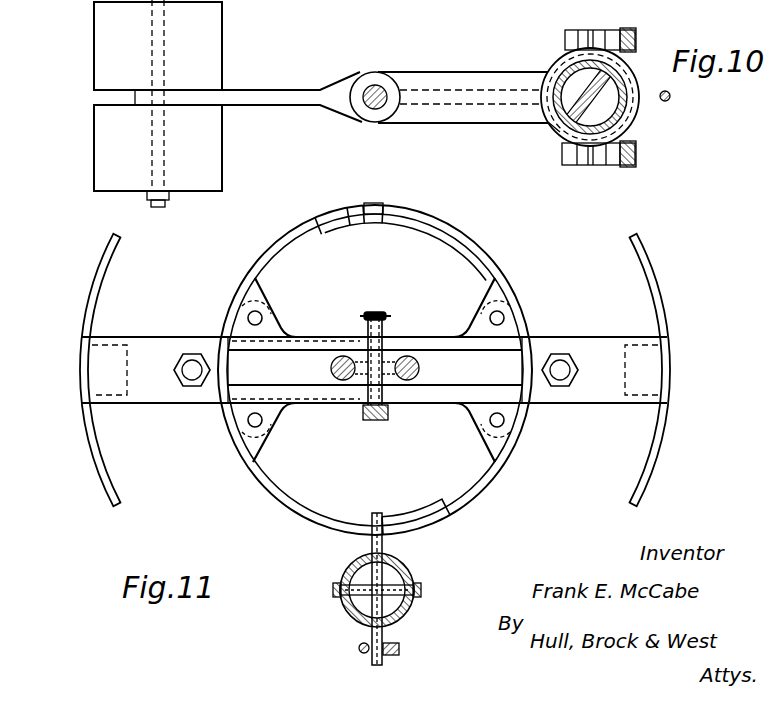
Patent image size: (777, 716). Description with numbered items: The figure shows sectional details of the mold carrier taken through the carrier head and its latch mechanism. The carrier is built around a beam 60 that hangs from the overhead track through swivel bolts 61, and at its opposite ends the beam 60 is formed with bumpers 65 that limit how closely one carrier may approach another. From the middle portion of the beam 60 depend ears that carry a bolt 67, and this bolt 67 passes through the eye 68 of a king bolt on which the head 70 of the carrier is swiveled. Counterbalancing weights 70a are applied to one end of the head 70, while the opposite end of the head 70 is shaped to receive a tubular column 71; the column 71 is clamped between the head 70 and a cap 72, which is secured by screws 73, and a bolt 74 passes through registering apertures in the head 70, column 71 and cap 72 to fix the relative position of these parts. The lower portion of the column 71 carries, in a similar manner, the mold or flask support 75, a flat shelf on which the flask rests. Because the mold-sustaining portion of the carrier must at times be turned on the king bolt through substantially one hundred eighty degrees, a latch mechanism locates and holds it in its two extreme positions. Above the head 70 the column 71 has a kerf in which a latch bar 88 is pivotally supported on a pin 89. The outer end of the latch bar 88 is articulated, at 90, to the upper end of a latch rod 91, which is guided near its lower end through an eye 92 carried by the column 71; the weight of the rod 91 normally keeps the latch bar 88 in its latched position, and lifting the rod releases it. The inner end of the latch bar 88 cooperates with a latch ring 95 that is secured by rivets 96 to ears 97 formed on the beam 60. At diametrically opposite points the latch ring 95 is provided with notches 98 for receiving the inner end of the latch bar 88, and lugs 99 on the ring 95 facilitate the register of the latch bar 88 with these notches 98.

In FIG. 11, the beam 60 is at (455, 396).
In FIG. 11, the swivel bolts 61 is at (182, 372).
In FIG. 11, the bumpers 65 is at (86, 303).
In FIG. 11, the bolt 67 is at (376, 312).
In FIG. 10, the eye 68 is at (381, 88).
In FIG. 11, the eye 68 is at (420, 368).
In FIG. 10, the head 70 is at (438, 124).
In FIG. 10, the counterbalancing weights 70a is at (97, 72).
In FIG. 10, the tubular column 71 is at (618, 112).
In FIG. 11, the tubular column 71 is at (412, 572).
In FIG. 10, the cap 72 is at (628, 78).
In FIG. 10, the screws 73 is at (633, 30).
In FIG. 10, the bolt 74 is at (556, 132).
In FIG. 10, the mold or flask support 75 is at (373, 8).
In FIG. 11, the latch bar 88 is at (372, 556).
In FIG. 11, the pin 89 is at (358, 596).
In FIG. 11, the articulation 90 is at (400, 646).
In FIG. 10, the latch rod 91 is at (671, 96).
In FIG. 11, the latch rod 91 is at (360, 651).
In FIG. 11, the eye 92 is at (476, 336).
In FIG. 11, the latch ring 95 is at (482, 250).
In FIG. 11, the rivets 96 is at (262, 318).
In FIG. 11, the ears 97 is at (264, 336).
In FIG. 11, the notches 98 is at (377, 204).
In FIG. 11, the lugs 99 is at (317, 217).